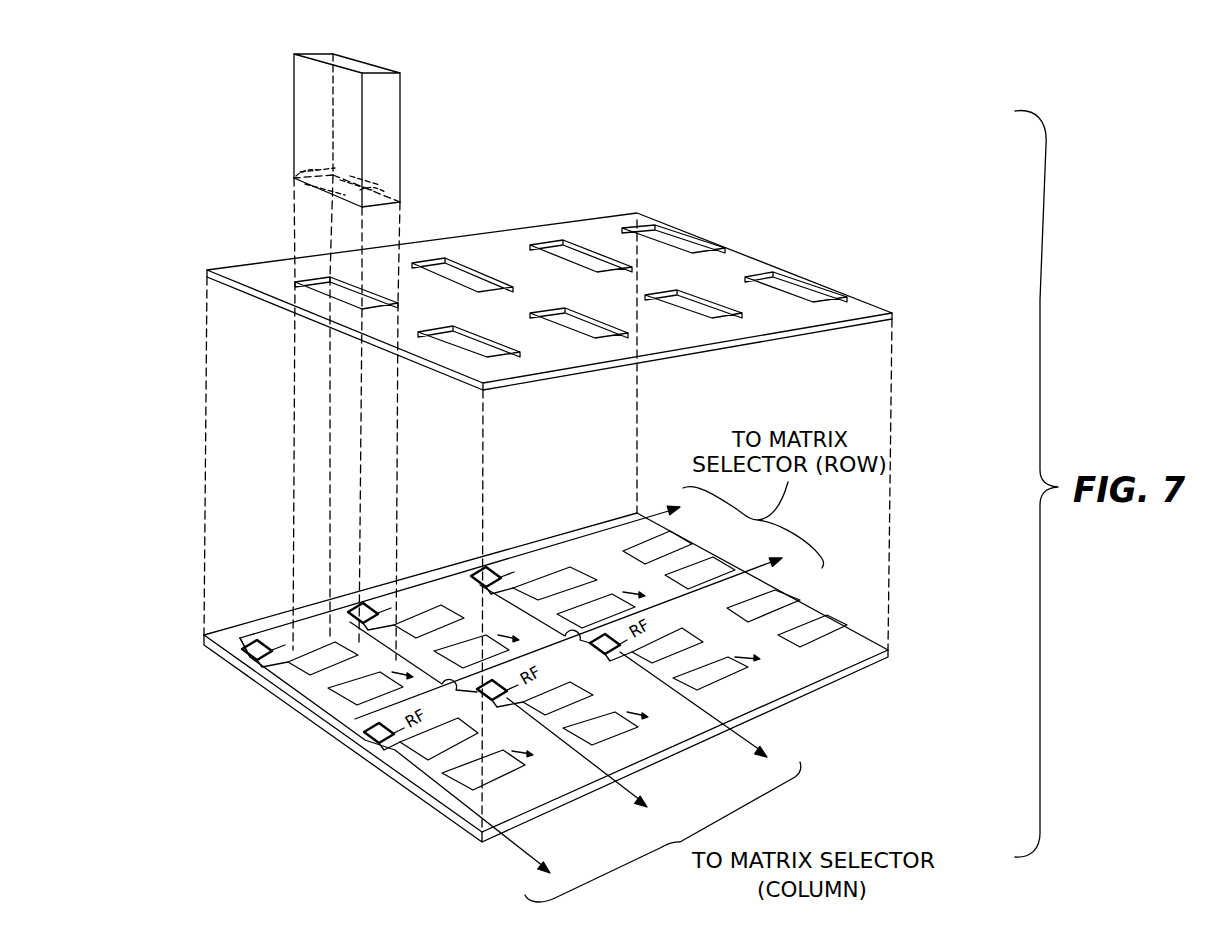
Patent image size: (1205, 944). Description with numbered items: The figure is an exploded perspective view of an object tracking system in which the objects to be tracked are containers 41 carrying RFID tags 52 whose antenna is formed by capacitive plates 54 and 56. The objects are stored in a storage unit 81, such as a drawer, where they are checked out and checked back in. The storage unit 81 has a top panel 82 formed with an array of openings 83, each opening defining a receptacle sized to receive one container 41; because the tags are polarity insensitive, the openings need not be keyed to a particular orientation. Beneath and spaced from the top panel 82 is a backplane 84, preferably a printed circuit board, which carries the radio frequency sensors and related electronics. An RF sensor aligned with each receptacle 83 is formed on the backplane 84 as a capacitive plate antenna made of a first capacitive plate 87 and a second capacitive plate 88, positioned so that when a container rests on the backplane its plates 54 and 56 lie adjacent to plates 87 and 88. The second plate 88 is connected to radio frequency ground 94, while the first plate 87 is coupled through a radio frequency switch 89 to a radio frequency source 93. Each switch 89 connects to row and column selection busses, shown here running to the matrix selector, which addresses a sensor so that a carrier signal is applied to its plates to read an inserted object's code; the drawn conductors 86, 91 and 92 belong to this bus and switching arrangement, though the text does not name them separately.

The container 41 is at (428, 84).
The RFID tag 52 is at (316, 150).
The capacitive plate 54 is at (292, 159).
The capacitive plate 56 is at (370, 187).
The storage unit 81 is at (688, 124).
The top panel 82 is at (488, 250).
The opening 83 is at (588, 252).
The backplane 84 is at (787, 677).
The bus line 86 is at (597, 565).
The first capacitive plate 87 is at (557, 583).
The second capacitive plate 88 is at (613, 607).
The radio frequency switch 89 is at (478, 575).
The row conductor 91 is at (445, 575).
The column conductor 92 is at (472, 588).
The radio frequency source 93 is at (508, 550).
The radio frequency ground 94 is at (637, 592).